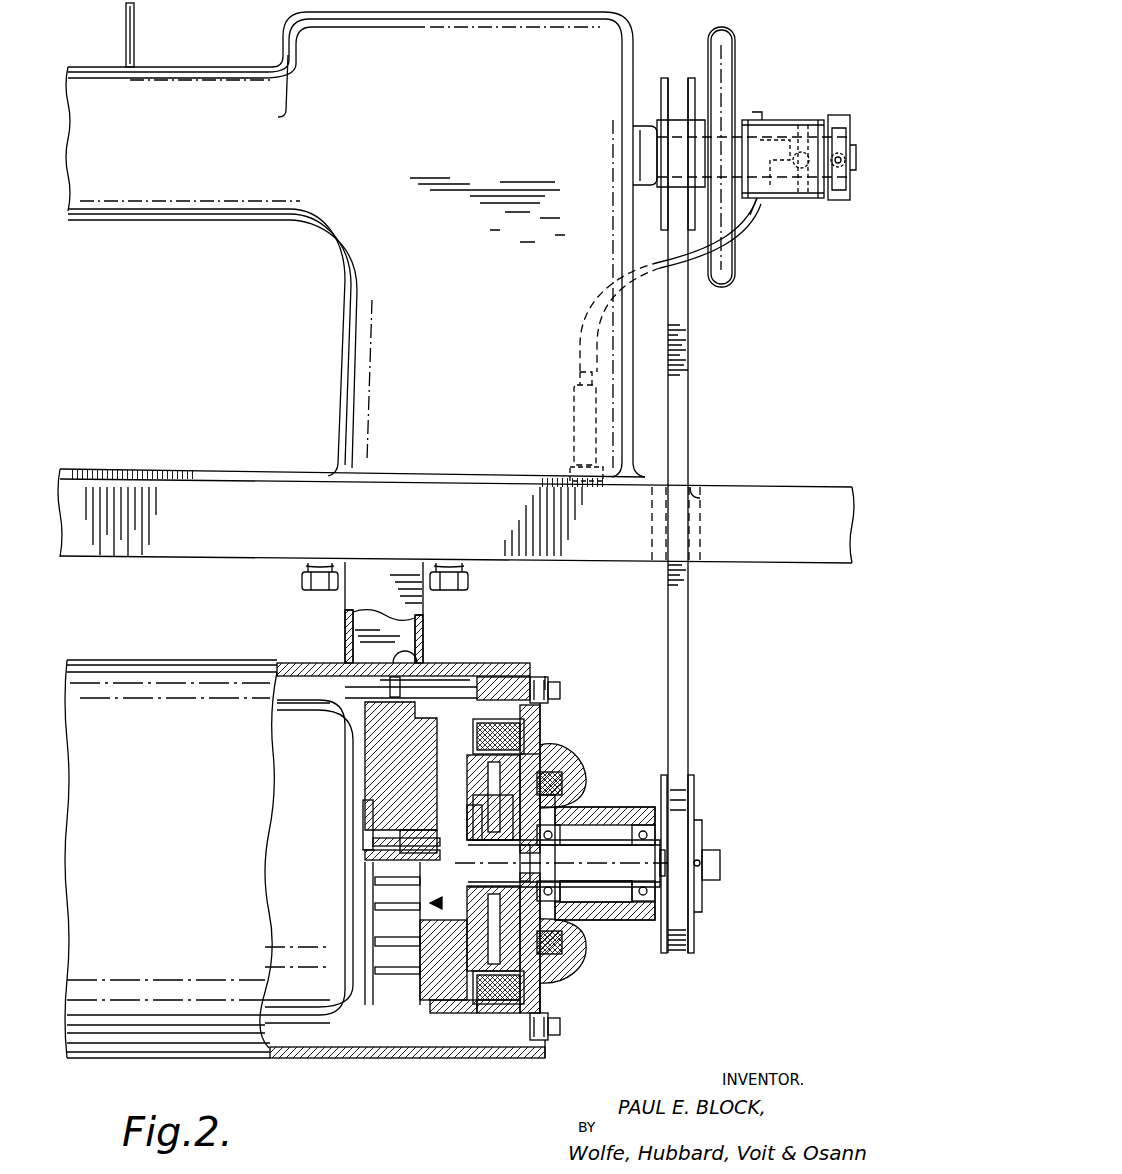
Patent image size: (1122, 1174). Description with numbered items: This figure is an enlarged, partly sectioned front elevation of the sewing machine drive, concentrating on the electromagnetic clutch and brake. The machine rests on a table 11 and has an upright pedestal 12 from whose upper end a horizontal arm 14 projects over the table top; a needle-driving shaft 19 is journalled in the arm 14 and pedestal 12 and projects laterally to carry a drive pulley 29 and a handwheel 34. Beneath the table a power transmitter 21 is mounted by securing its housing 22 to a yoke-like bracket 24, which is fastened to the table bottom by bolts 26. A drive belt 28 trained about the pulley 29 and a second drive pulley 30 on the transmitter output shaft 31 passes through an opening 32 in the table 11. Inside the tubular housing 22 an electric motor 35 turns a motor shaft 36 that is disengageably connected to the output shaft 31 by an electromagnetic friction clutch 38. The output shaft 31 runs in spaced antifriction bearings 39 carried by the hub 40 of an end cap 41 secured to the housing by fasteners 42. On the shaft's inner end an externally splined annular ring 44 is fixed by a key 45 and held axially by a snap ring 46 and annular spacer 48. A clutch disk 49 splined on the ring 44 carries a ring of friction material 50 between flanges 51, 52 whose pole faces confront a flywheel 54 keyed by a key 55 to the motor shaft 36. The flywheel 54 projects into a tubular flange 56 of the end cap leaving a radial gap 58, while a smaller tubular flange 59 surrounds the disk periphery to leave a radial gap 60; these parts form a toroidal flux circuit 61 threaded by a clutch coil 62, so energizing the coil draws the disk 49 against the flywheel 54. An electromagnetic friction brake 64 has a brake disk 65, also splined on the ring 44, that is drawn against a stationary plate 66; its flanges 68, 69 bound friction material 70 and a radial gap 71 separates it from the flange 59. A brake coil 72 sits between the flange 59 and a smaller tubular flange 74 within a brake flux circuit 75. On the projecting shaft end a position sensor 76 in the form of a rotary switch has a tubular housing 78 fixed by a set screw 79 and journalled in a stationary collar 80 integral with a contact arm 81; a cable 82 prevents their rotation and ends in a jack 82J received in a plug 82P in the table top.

The table 11 is at (150, 492).
The pedestal 12 is at (365, 342).
The horizontal arm 14 is at (178, 198).
The shaft 19 is at (715, 137).
The power transmitter 21 is at (151, 650).
The housing 22 is at (300, 662).
The bracket 24 is at (418, 609).
The bolts 26 is at (468, 586).
The drive belt 28 is at (684, 640).
The drive pulley 29 is at (662, 78).
The drive pulley 30 is at (692, 795).
The output shaft 31 is at (708, 857).
The opening 32 is at (698, 490).
The handwheel 34 is at (725, 52).
The electric motor 35 is at (322, 1030).
The motor shaft 36 is at (366, 856).
The electromagnetic friction clutch 38 is at (370, 906).
The antifriction bearings 39 is at (560, 838).
The hub 40 is at (585, 815).
The end cap 41 is at (546, 690).
The fasteners 42 is at (560, 690).
The externally splined annular ring 44 is at (448, 898).
The key 45 is at (497, 838).
The snap ring 46 is at (470, 840).
The annular spacer 48 is at (528, 868).
The clutch disk 49 is at (472, 815).
The friction material 50 is at (470, 783).
The flange 51 is at (433, 797).
The flange 52 is at (468, 768).
The flywheel 54 is at (366, 804).
The key 55 is at (372, 842).
The tubular flange 56 is at (475, 1004).
The radial gap 58 is at (450, 1004).
The tubular flange 59 is at (497, 1002).
The radial gap 60 is at (470, 1003).
The flux circuit 61 is at (522, 758).
The clutch coil 62 is at (494, 720).
The electromagnetic friction brake 64 is at (548, 775).
The brake disk 65 is at (473, 920).
The stationary plate 66 is at (560, 888).
The flange 68 is at (577, 927).
The flange 69 is at (542, 978).
The friction material 70 is at (545, 968).
The radial gap 71 is at (535, 768).
The brake coil 72 is at (552, 795).
The tubular flange 74 is at (562, 920).
The flux circuit 75 is at (573, 942).
The position sensor 76 is at (799, 171).
The tubular housing 78 is at (773, 197).
The set screw 79 is at (755, 208).
The stationary collar 80 is at (838, 200).
The contact arm 81 is at (804, 124).
The cable 82 is at (745, 236).
The jack 82J is at (573, 418).
The plug 82P is at (572, 470).